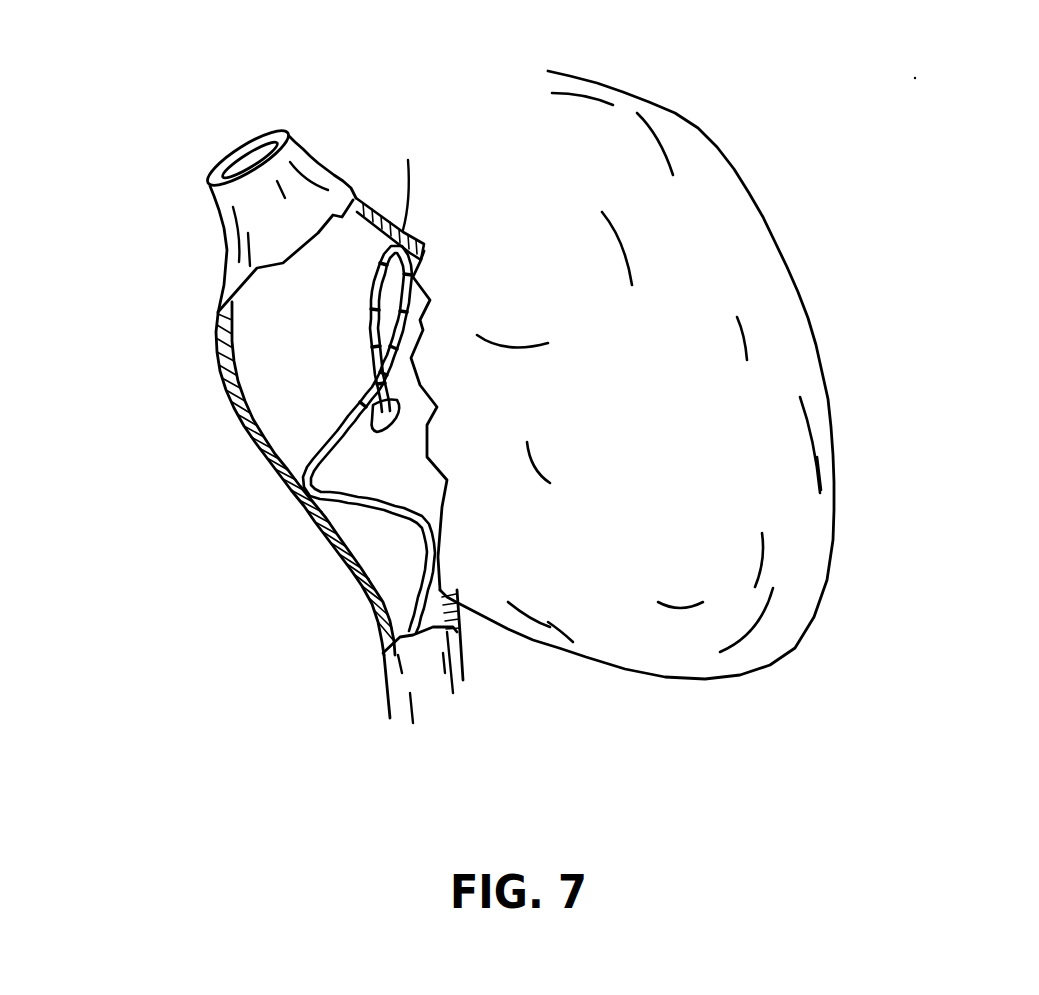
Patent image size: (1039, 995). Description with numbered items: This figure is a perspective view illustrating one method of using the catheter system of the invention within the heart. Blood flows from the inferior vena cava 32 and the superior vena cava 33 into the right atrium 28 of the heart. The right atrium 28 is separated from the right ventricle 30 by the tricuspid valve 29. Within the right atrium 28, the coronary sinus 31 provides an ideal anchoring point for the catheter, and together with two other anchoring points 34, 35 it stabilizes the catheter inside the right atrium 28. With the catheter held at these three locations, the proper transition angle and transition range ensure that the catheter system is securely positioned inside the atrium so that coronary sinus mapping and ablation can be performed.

The right atrium 28 is at (275, 327).
The tricuspid valve 29 is at (448, 458).
The right ventricle 30 is at (590, 527).
The coronary sinus 31 is at (364, 437).
The inferior vena cava 32 is at (418, 689).
The superior vena cava 33 is at (260, 160).
The anchoring point 34 is at (297, 480).
The anchoring point 35 is at (403, 240).